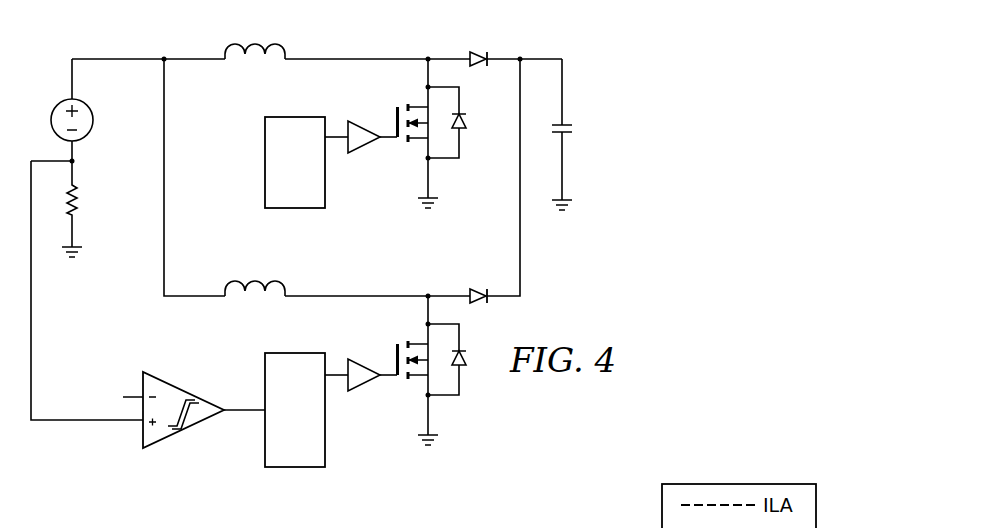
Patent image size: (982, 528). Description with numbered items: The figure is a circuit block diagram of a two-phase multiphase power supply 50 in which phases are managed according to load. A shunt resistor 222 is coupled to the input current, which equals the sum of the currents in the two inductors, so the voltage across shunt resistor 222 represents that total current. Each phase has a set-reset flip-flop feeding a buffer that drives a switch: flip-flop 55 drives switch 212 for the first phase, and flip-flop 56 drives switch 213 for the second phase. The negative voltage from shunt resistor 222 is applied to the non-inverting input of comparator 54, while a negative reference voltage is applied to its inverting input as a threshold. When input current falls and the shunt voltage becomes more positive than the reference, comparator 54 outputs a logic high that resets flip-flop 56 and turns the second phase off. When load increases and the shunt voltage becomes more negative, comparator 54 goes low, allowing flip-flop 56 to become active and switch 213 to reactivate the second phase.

The multiphase power supply 50 is at (607, 70).
The switch 212 is at (397, 113).
The switch 213 is at (397, 350).
The shunt resistor 222 is at (80, 199).
The comparator 54 is at (186, 431).
The flip-flop 55 is at (295, 209).
The flip-flop 56 is at (295, 468).